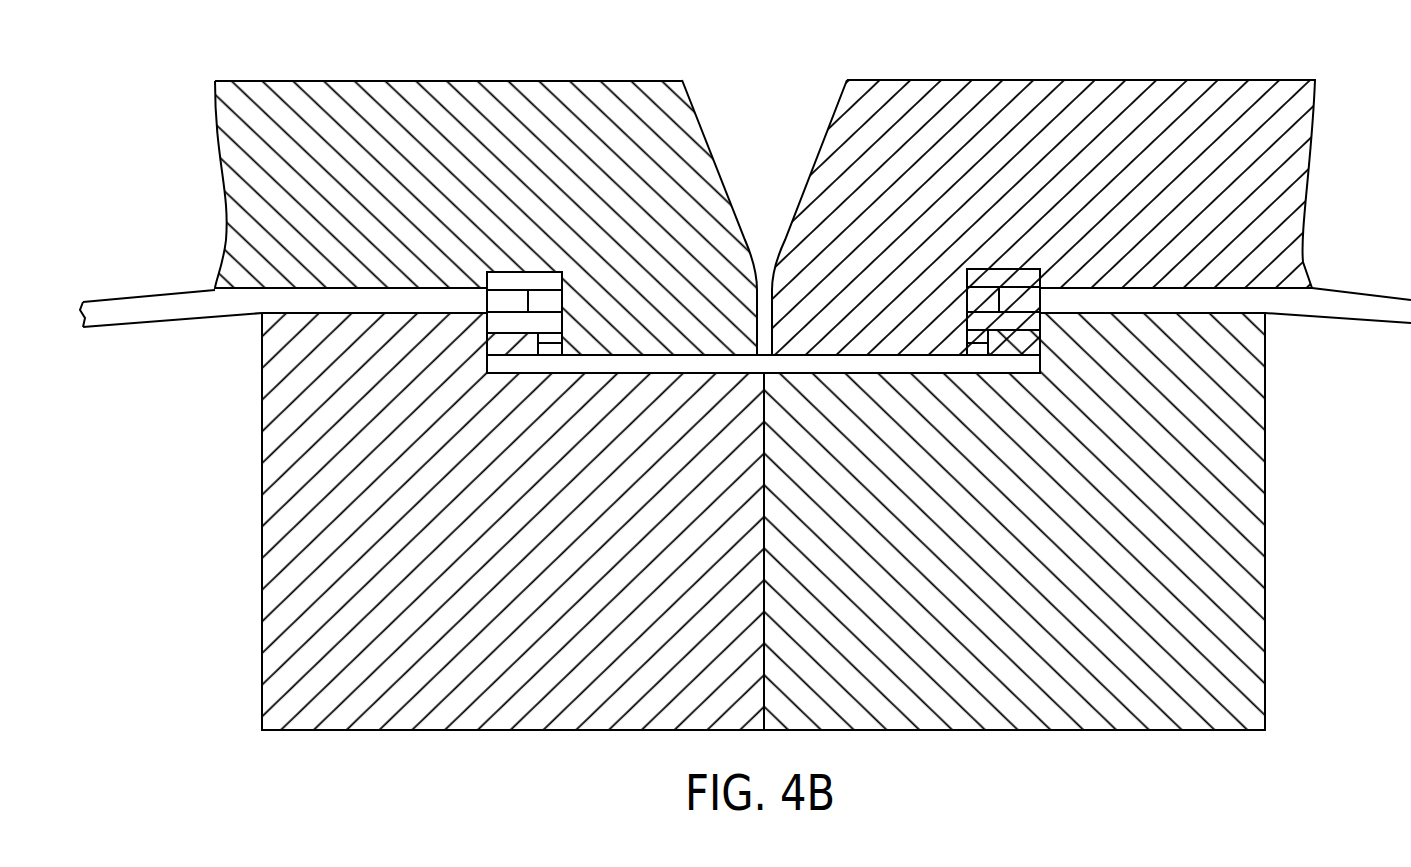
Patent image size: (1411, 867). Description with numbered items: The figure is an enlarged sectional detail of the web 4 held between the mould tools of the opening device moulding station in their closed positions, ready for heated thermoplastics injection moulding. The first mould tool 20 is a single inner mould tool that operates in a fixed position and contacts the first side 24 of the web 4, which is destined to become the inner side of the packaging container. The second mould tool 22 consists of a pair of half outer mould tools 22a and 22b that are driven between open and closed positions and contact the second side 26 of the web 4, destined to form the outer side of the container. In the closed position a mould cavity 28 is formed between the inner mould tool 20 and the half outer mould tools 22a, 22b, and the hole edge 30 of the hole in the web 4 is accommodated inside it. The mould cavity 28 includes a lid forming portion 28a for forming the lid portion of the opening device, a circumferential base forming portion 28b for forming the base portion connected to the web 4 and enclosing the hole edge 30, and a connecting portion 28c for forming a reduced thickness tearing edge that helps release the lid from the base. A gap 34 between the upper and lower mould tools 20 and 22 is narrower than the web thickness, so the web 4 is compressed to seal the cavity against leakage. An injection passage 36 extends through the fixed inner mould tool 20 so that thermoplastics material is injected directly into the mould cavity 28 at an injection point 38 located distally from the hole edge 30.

The web 4 is at (1388, 323).
The first mould tool 20 is at (765, 187).
The second mould tool 22 is at (813, 540).
The half outer mould tool 22a is at (993, 730).
The half outer mould tool 22b is at (470, 730).
The first side of web 24 is at (745, 299).
The second side of web 26 is at (1142, 315).
The mould cavity 28 is at (710, 325).
The lid forming portion 28a is at (600, 365).
The base forming portion 28b is at (525, 272).
The connecting portion 28c is at (548, 338).
The hole edge 30 is at (1022, 292).
The gap 34 is at (348, 298).
The injection passage 36 is at (753, 112).
The injection point 38 is at (773, 378).